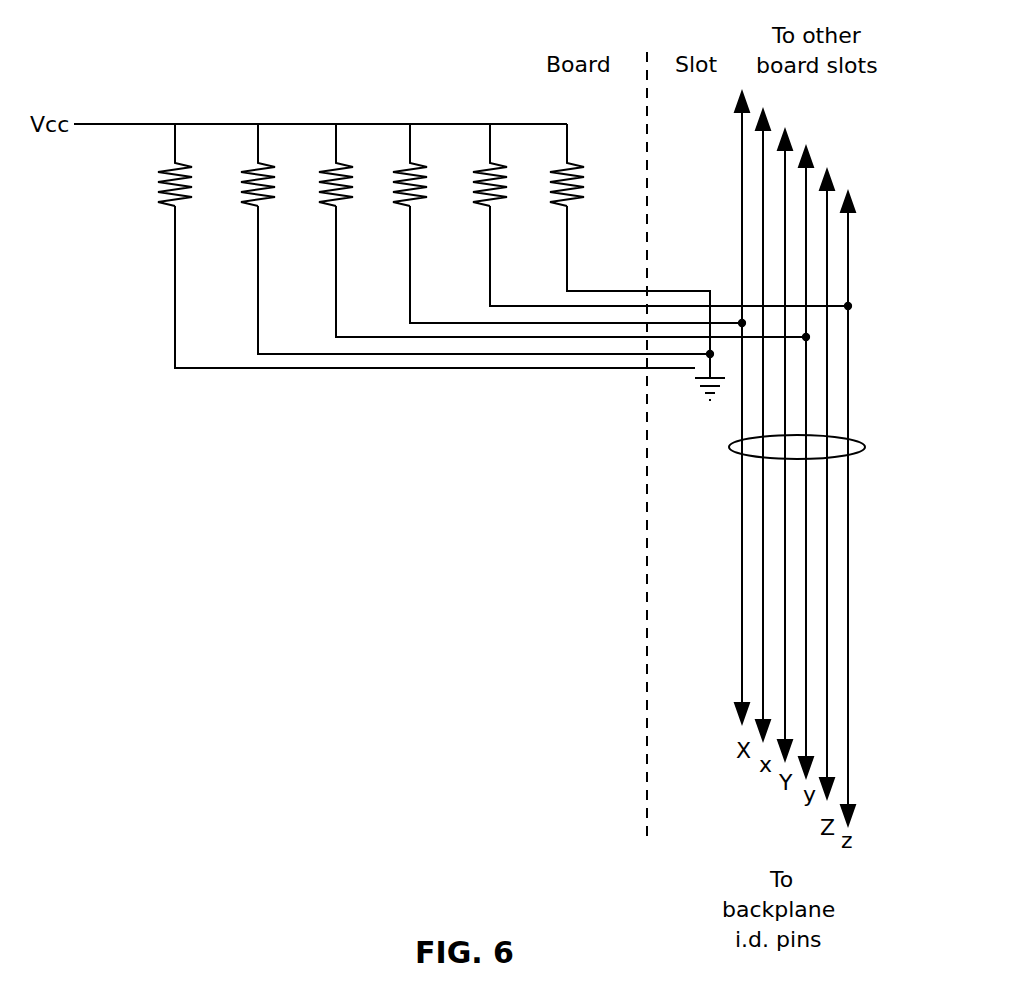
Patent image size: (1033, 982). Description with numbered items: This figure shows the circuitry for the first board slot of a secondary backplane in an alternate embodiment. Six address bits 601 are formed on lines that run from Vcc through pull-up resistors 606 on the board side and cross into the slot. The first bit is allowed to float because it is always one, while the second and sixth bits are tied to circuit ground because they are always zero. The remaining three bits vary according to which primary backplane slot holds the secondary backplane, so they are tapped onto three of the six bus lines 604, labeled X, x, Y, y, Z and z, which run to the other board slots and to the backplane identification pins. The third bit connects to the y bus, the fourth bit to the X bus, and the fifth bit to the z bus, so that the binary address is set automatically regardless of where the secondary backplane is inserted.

The pull-up resistors 606:1-6 606 is at (160, 186).
The address bits 601 is at (513, 303).
The bus lines 604 is at (736, 447).